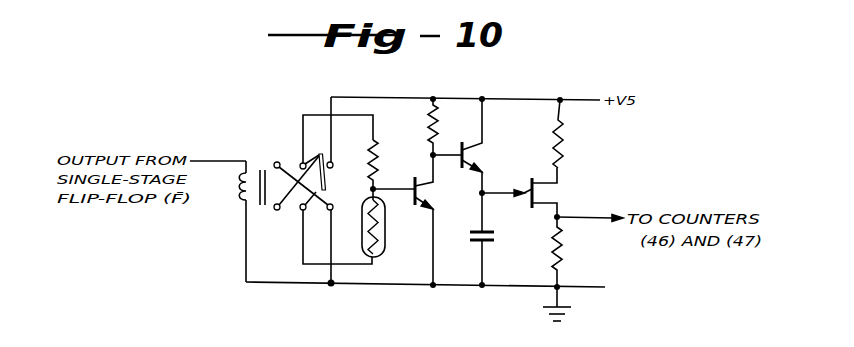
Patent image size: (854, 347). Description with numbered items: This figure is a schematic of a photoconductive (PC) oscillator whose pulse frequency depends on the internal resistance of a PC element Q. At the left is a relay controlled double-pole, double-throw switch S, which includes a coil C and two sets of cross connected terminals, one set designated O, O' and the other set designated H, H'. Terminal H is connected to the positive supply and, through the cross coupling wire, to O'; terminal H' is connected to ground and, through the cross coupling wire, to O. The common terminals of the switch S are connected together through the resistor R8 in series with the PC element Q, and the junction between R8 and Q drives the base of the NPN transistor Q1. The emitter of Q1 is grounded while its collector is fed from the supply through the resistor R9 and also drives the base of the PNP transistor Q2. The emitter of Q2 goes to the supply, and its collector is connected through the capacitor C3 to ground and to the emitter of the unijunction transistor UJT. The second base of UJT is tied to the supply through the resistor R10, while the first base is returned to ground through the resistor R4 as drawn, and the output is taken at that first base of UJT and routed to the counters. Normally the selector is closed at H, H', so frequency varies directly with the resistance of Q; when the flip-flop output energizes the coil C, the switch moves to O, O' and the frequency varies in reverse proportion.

The coil C is at (246, 199).
The terminal O is at (283, 162).
The terminal O' is at (287, 201).
The relay controlled double-pole, double-throw switch S is at (292, 167).
The terminal H is at (342, 147).
The terminal H' is at (337, 224).
The resistor R8 is at (382, 164).
The resistor R9 is at (419, 127).
The PC element Q is at (386, 246).
The NPN transistor Q1 is at (432, 220).
The PNP transistor Q2 is at (482, 146).
The capacitor C3 is at (491, 239).
The unijunction transistor UJT is at (550, 194).
The resistor R10 is at (574, 134).
The resistor R4 is at (569, 252).